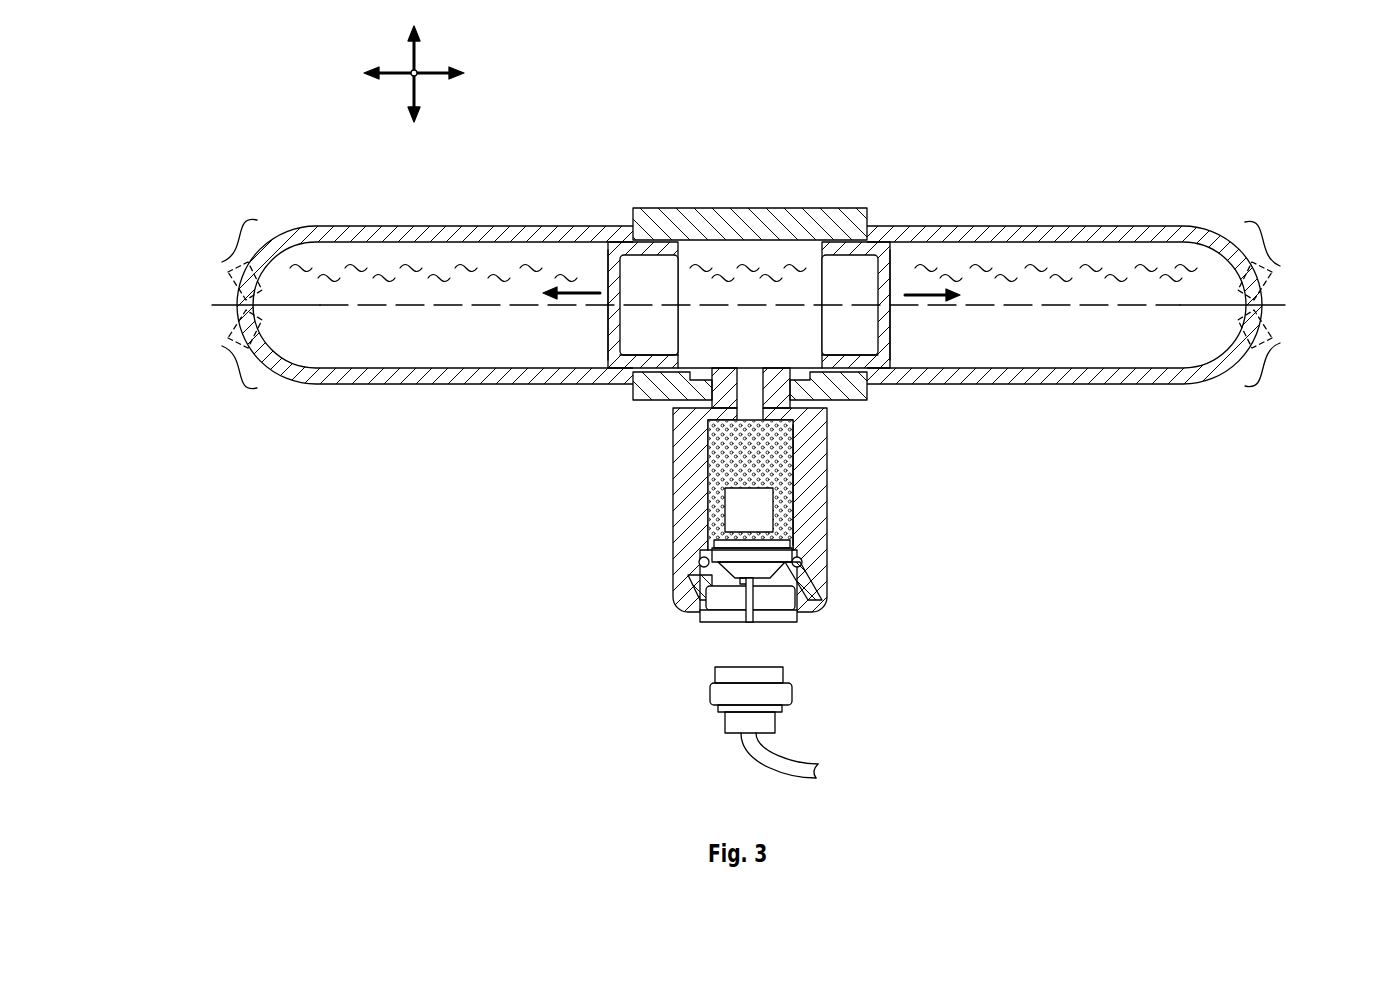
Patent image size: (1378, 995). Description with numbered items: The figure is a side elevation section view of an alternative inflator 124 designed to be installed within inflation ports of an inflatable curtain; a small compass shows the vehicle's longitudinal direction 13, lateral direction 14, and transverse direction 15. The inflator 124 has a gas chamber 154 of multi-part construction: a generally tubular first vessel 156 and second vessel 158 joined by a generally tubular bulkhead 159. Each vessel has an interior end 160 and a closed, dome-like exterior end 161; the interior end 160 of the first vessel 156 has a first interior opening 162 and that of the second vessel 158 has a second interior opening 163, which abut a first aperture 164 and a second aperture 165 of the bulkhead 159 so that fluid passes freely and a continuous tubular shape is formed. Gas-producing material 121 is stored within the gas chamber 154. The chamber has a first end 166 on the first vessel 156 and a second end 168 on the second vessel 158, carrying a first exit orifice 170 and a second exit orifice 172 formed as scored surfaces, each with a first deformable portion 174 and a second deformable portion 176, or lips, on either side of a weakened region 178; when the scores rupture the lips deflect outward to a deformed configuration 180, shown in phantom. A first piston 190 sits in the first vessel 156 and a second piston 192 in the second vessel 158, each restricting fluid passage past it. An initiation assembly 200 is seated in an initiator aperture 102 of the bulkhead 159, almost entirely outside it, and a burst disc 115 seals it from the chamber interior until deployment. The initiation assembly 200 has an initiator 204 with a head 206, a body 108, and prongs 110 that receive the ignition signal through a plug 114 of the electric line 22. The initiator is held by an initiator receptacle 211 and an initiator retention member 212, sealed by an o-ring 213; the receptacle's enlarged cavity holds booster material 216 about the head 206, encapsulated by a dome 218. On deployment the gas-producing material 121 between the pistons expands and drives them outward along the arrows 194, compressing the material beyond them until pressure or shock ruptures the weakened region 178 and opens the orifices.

The longitudinal direction 13 is at (437, 80).
The lateral direction 14 is at (412, 78).
The transverse direction 15 is at (418, 58).
The electric line 22 is at (752, 768).
The initiator aperture 102 is at (690, 392).
The body 108 is at (722, 548).
The prongs 110 is at (722, 632).
The plug 114 is at (708, 693).
The burst disc 115 is at (763, 370).
The gas-producing material 121 is at (459, 340).
The inflator 124 is at (824, 124).
The gas chamber 154 is at (726, 190).
The first vessel 156 is at (1020, 226).
The second vessel 158 is at (480, 226).
The bulkhead 159 is at (840, 208).
The interior end 160 is at (610, 242).
The exterior end 161 is at (315, 226).
The first interior opening 162 is at (872, 250).
The second interior opening 163 is at (626, 250).
The first aperture 164 is at (836, 362).
The second aperture 165 is at (652, 362).
The first end 166 is at (1190, 384).
The second end 168 is at (313, 384).
The first exit orifice 170 is at (1287, 315).
The second exit orifice 172 is at (221, 285).
The first deformable portion 174 is at (751, 234).
The second deformable portion 176 is at (746, 366).
The weakened region 178 is at (213, 303).
The deformed configuration 180 is at (268, 290).
The first piston 190 is at (892, 326).
The second piston 192 is at (606, 325).
The arrows 194 is at (560, 290).
The initiation assembly 200 is at (854, 618).
The initiator 204 is at (803, 510).
The head 206 is at (740, 500).
The initiator receptacle 211 is at (672, 445).
The initiator retention member 212 is at (690, 598).
The o-ring 213 is at (805, 556).
The booster material 216 is at (795, 455).
The dome 218 is at (785, 416).